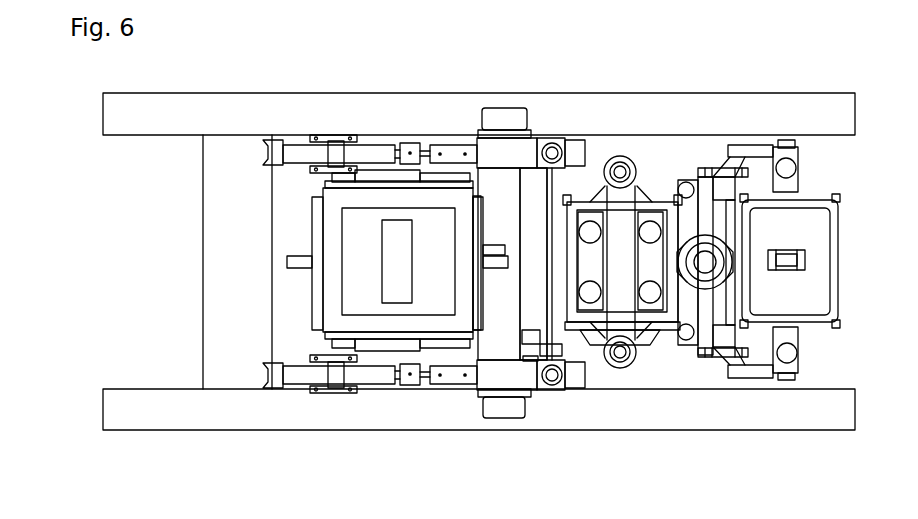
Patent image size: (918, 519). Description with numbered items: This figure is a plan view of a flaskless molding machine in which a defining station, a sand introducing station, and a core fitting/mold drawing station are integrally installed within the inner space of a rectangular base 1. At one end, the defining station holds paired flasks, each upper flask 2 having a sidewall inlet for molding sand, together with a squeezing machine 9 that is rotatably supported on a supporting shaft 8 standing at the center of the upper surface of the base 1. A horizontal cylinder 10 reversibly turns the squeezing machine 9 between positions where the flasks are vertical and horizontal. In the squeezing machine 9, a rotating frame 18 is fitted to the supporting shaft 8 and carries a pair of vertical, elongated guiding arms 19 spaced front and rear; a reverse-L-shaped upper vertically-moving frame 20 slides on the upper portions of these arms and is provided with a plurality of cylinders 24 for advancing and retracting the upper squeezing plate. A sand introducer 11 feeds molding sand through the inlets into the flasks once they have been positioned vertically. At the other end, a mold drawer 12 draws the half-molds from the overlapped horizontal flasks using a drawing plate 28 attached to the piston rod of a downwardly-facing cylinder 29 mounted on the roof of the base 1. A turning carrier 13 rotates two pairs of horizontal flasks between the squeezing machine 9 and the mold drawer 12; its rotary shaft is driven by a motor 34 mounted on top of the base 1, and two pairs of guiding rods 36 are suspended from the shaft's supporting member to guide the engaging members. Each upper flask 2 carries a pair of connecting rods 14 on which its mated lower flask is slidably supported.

The base 1 is at (313, 418).
The upper flask 2 is at (838, 268).
The supporting shaft 8 is at (503, 420).
The squeezing machine 9 is at (464, 112).
The horizontal cylinder 10 is at (293, 150).
The sand introducer 11 is at (296, 237).
The mold drawer 12 is at (819, 148).
The turning carrier 13 is at (719, 147).
The connecting rods 14 is at (618, 158).
The rotating frame 18 is at (500, 326).
The guiding arms 19 is at (553, 143).
The upper vertically-moving frame 20 is at (567, 226).
The cylinders 24 is at (652, 302).
The drawing plate 28 is at (813, 225).
The downwardly-facing cylinder 29 is at (790, 272).
The motor 34 is at (714, 258).
The guiding rods 36 is at (688, 182).